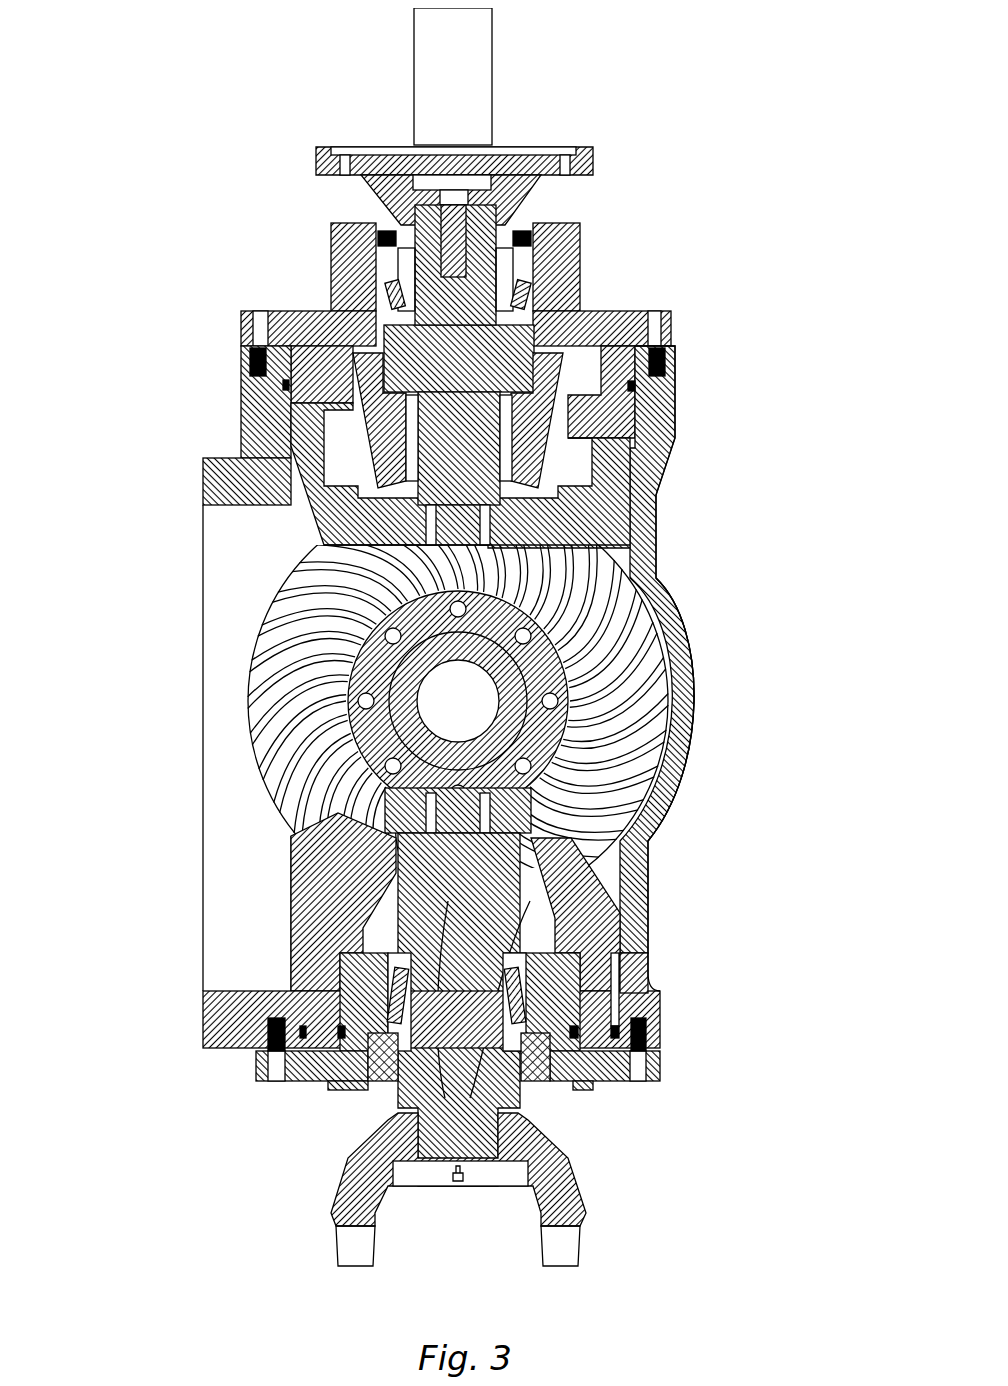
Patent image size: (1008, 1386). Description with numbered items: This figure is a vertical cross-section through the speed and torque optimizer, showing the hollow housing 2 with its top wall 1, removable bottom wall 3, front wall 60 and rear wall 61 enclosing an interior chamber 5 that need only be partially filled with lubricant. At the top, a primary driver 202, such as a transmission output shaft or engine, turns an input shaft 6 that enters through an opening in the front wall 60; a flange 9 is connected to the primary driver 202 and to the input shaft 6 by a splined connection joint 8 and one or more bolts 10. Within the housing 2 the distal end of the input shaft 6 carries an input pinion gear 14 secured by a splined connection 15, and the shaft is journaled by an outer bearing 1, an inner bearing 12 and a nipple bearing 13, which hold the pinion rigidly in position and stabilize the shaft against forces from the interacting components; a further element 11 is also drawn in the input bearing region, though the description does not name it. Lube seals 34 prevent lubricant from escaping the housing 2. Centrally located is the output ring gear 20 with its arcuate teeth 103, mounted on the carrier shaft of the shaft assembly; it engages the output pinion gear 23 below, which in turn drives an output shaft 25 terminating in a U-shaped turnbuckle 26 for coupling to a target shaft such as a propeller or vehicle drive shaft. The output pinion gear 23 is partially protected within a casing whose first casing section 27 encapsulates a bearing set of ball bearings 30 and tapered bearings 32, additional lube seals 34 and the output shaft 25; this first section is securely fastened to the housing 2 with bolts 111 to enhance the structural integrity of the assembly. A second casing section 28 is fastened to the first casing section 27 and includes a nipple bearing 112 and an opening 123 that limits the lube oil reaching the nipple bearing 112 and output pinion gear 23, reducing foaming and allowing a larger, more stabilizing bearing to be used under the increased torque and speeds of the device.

The primary driver 202 is at (455, 65).
The splined connection joint 8 is at (393, 213).
The flange 9 is at (535, 185).
The bolts 10 is at (476, 157).
The inner bearing 12 is at (320, 365).
The front wall 60 is at (600, 303).
The input pinion gear 14 is at (568, 395).
The hollow housing 2 is at (720, 603).
The arcuate teeth 103 is at (632, 636).
The removable bottom wall 3 is at (195, 680).
The splined connection 15 is at (497, 433).
The outer bearing 1 is at (585, 440).
The input shaft 6 is at (400, 262).
The upper bearing 11 is at (385, 300).
The nipple bearing 13 is at (405, 508).
The output ring gear 20 is at (565, 812).
The opening 123 is at (512, 805).
The nipple bearing 112 is at (445, 825).
The second casing section 28 is at (595, 884).
The interior chamber 5 is at (645, 880).
The U-shaped turnbuckle 26 is at (563, 1178).
The bolts 111 is at (270, 1047).
The output shaft 25 is at (445, 893).
The output pinion gear 23 is at (560, 920).
The first casing section 27 is at (265, 1073).
The rear wall 61 is at (610, 1075).
The ball bearings 30 is at (375, 1073).
The tapered bearings 32 is at (458, 1175).
The lube seals 34 is at (385, 225).